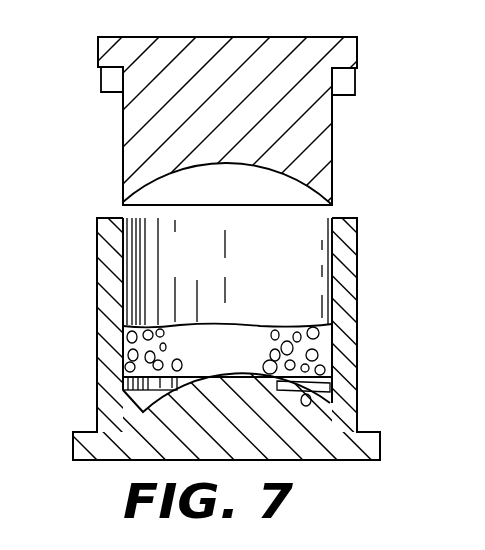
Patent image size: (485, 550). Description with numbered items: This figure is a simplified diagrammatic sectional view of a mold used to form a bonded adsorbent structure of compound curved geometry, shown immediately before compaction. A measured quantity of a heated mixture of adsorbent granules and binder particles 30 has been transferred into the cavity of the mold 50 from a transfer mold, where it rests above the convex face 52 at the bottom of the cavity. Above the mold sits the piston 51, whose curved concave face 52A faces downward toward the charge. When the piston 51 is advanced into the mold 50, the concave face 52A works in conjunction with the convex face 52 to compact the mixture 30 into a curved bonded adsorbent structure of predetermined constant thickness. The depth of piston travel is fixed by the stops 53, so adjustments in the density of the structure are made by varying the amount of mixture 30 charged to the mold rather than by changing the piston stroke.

The heated mixture of adsorbent granules and binder particles 30 is at (338, 350).
The mold 50 is at (357, 275).
The piston 51 is at (318, 145).
The convex face 52 is at (305, 392).
The curved concave face 52A is at (180, 170).
The stops 53 is at (112, 85).